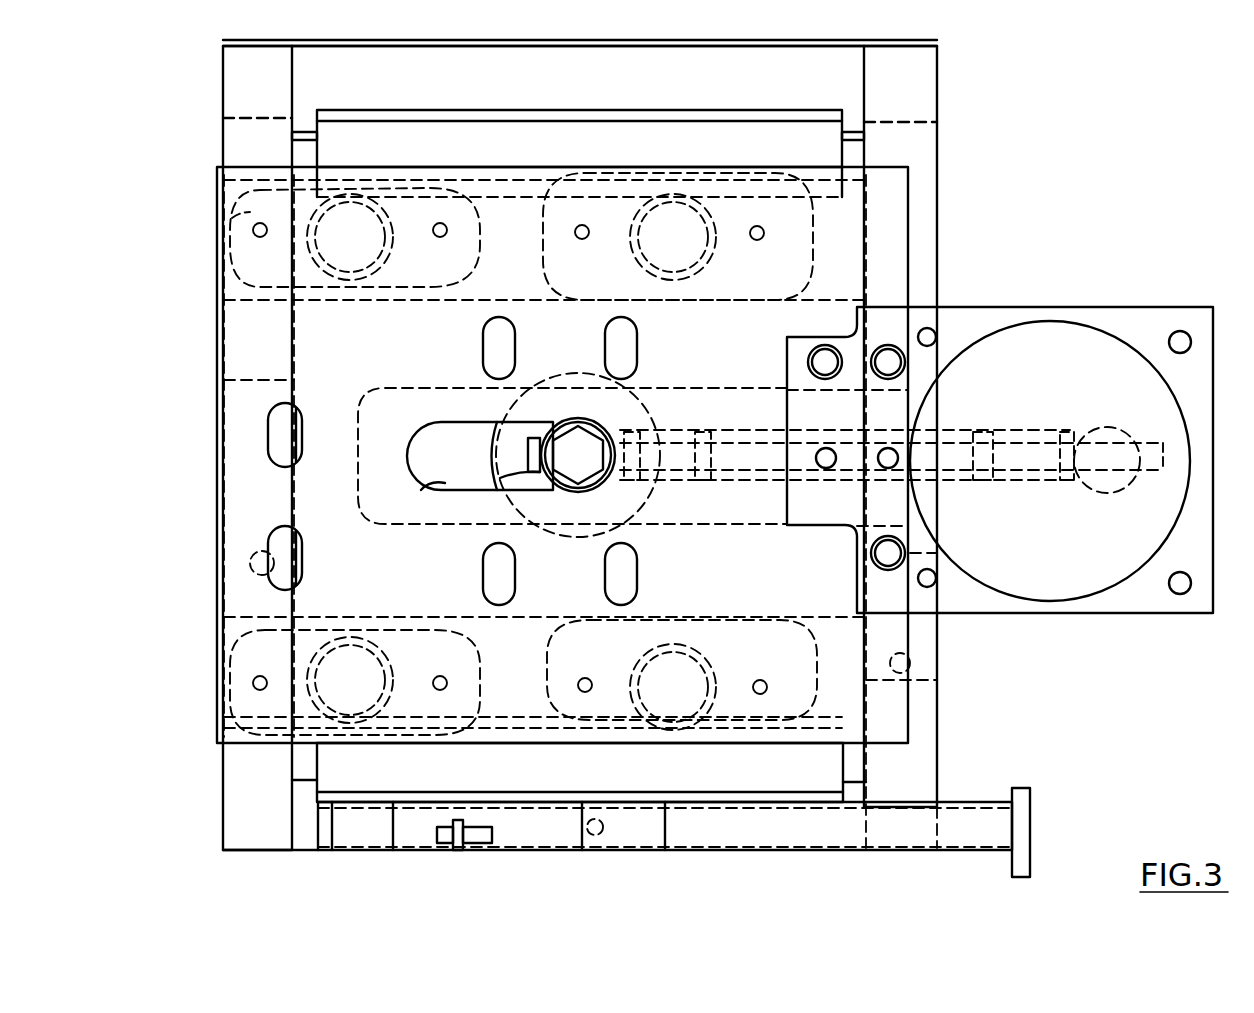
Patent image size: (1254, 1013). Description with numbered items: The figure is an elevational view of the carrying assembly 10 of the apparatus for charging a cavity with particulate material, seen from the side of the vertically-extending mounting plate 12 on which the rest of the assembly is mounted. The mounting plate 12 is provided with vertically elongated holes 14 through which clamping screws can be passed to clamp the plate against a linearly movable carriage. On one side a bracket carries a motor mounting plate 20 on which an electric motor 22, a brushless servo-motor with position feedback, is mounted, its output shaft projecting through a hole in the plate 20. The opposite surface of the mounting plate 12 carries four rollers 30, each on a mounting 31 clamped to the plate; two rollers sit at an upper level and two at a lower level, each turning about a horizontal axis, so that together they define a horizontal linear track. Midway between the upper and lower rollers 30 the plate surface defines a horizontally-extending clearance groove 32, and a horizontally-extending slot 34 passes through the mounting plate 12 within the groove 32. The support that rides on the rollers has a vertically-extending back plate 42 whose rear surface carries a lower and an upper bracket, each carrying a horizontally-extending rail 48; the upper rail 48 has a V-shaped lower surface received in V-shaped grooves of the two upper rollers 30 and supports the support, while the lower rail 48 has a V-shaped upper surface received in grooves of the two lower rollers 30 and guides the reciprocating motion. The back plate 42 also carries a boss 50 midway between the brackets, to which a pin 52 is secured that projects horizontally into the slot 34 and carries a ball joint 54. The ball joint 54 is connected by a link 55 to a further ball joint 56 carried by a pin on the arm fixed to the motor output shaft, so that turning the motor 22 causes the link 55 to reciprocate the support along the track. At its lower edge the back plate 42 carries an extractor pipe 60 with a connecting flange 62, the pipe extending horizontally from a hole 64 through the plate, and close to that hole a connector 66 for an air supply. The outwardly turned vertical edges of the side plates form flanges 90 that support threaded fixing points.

The carrying assembly 10 is at (1045, 115).
The mounting plate 12 is at (217, 318).
The vertically elongated holes 14 is at (488, 340).
The motor mounting plate 20 is at (1135, 613).
The electric motor 22 is at (1024, 585).
The rollers 30 is at (322, 238).
The mounting 31 is at (232, 218).
The clearance groove 32 is at (363, 408).
The slot 34 is at (430, 483).
The back plate 42 is at (300, 77).
The rail 48 is at (325, 137).
The boss 50 is at (500, 453).
The pin 52 is at (590, 465).
The ball joint 54 is at (500, 478).
The link 55 is at (760, 470).
The ball joint 56 is at (1112, 428).
The extractor pipe 60 is at (960, 825).
The connecting flange 62 is at (1030, 796).
The hole 64 is at (615, 840).
The connector 66 is at (500, 840).
The flanges 90 is at (235, 155).